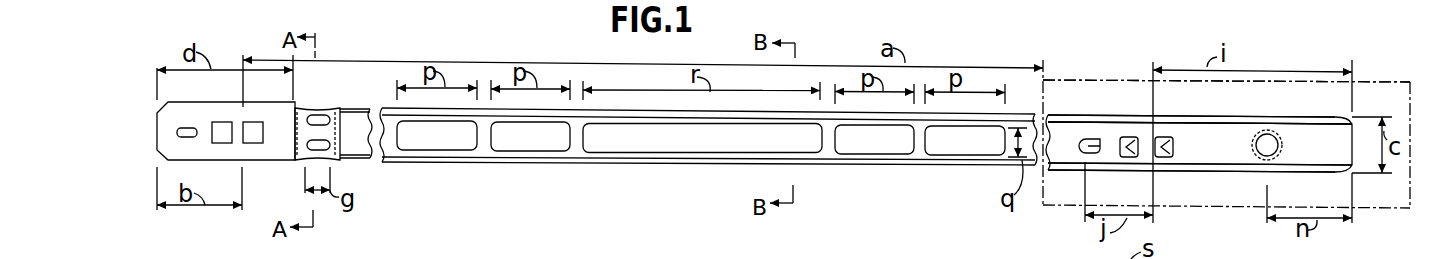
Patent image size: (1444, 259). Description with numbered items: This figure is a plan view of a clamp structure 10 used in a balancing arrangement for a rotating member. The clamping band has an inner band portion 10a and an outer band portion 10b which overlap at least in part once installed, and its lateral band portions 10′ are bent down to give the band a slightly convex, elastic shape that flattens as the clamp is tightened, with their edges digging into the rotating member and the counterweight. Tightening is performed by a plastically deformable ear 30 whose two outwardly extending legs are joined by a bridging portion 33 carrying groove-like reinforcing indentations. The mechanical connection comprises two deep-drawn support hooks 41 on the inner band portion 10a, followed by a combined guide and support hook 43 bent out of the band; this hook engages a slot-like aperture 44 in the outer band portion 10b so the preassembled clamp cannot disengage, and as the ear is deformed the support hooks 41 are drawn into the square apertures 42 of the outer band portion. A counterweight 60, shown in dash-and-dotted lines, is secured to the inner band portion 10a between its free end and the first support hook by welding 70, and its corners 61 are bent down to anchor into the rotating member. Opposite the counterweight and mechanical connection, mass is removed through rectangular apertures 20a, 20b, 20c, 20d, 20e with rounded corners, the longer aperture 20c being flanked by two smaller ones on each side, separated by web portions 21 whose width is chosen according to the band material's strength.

The clamp structure 10 is at (1085, 94).
The lateral band portion 10′ is at (1225, 170).
The inner band portion 10a is at (1227, 133).
The outer band portion 10b is at (281, 121).
The rectangular aperture 20a is at (435, 148).
The rectangular aperture 20b is at (533, 147).
The rectangular aperture 20c is at (683, 148).
The rectangular aperture 20d is at (868, 152).
The rectangular aperture 20e is at (952, 154).
The web portion 21 is at (487, 147).
The ear 30 is at (338, 84).
The bridging portion 33 is at (329, 132).
The support hook 41 is at (1156, 145).
The rectangular aperture 42 is at (224, 144).
The guide and support hook 43 is at (1090, 135).
The slot-like aperture 44 is at (192, 128).
The counterweight 60 is at (1396, 63).
The corner 61 is at (1043, 62).
The welding 70 is at (1278, 139).